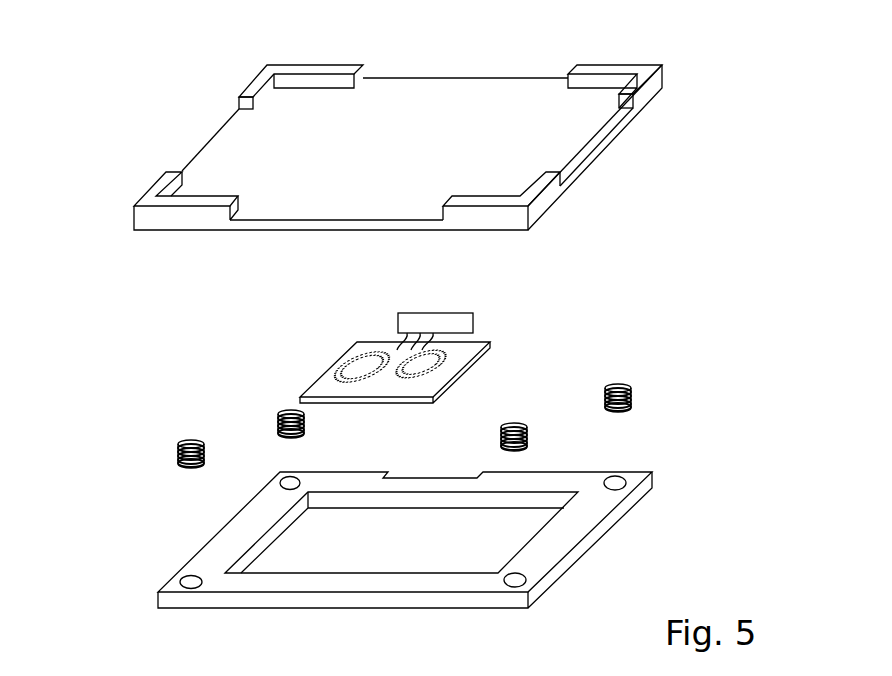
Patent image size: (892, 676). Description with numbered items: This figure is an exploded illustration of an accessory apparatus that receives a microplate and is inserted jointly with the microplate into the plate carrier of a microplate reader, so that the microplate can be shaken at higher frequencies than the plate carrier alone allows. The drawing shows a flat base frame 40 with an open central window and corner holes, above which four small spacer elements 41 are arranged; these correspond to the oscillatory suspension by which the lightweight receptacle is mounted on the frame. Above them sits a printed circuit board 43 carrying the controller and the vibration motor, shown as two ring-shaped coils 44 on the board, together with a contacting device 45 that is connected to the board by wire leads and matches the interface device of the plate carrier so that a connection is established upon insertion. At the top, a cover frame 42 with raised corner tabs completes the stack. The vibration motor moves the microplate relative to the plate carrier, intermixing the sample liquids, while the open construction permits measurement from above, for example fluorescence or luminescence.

The base plate 40 is at (555, 543).
The spacer bushings 41 is at (622, 381).
The top frame 42 is at (567, 150).
The circuit board 43 is at (480, 357).
The coil antenna 44 is at (437, 368).
The connector module 45 is at (462, 323).